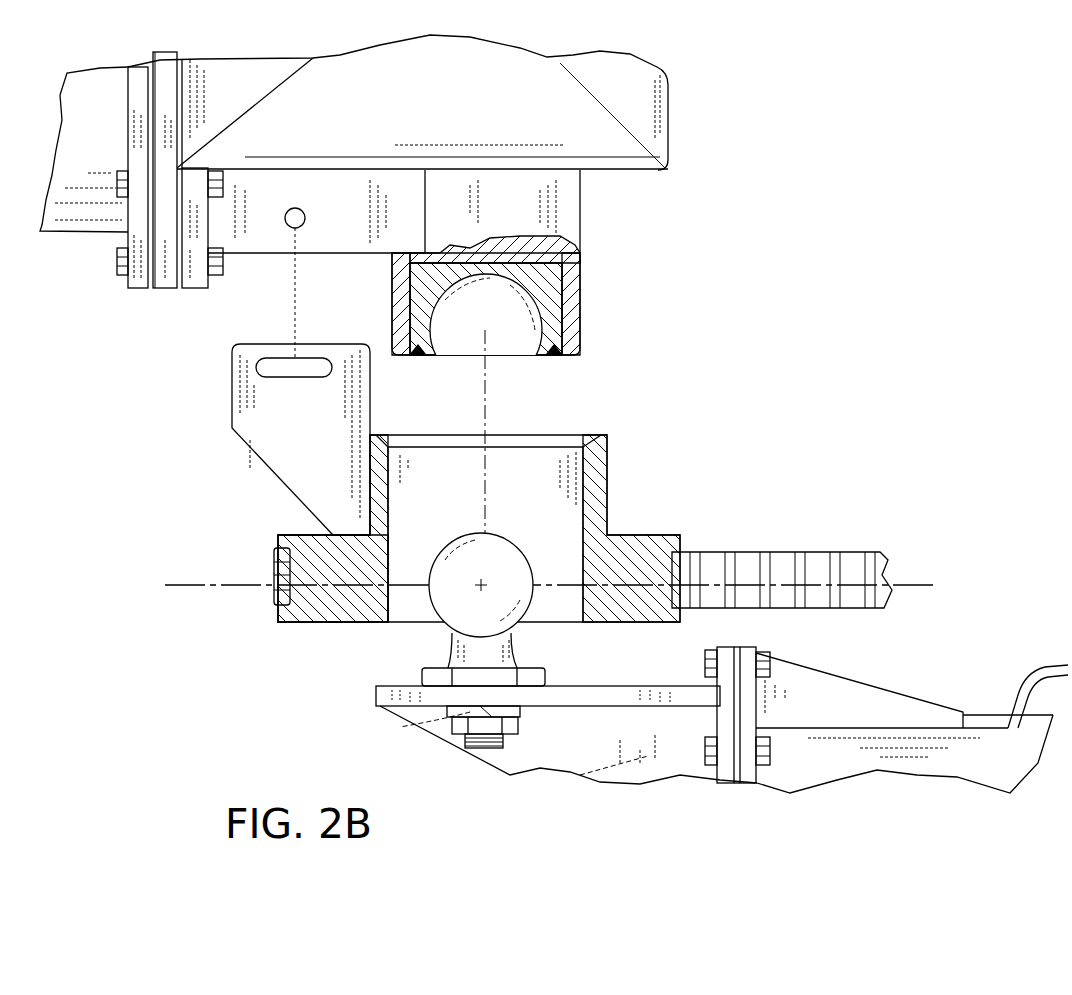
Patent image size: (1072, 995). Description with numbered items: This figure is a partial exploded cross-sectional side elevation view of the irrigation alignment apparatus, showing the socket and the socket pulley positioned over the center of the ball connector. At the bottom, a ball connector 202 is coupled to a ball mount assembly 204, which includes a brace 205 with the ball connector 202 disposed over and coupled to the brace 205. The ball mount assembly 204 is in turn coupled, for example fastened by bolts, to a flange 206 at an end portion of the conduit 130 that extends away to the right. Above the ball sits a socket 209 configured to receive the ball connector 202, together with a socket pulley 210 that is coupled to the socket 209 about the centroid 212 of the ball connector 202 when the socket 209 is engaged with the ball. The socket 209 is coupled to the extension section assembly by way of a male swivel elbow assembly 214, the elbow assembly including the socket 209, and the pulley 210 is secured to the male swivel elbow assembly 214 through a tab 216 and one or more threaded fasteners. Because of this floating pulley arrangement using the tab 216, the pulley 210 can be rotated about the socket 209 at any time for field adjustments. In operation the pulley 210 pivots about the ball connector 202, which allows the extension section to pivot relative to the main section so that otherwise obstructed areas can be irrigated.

The conduit 130 is at (985, 735).
The ball connector 202 is at (455, 627).
The ball mount assembly 204 is at (362, 694).
The brace 205 is at (510, 755).
The flange 206 is at (760, 652).
The socket 209 is at (556, 358).
The socket pulley 210 is at (637, 557).
The centroid 212 is at (485, 583).
The male swivel elbow assembly 214 is at (660, 132).
The tab 216 is at (262, 410).